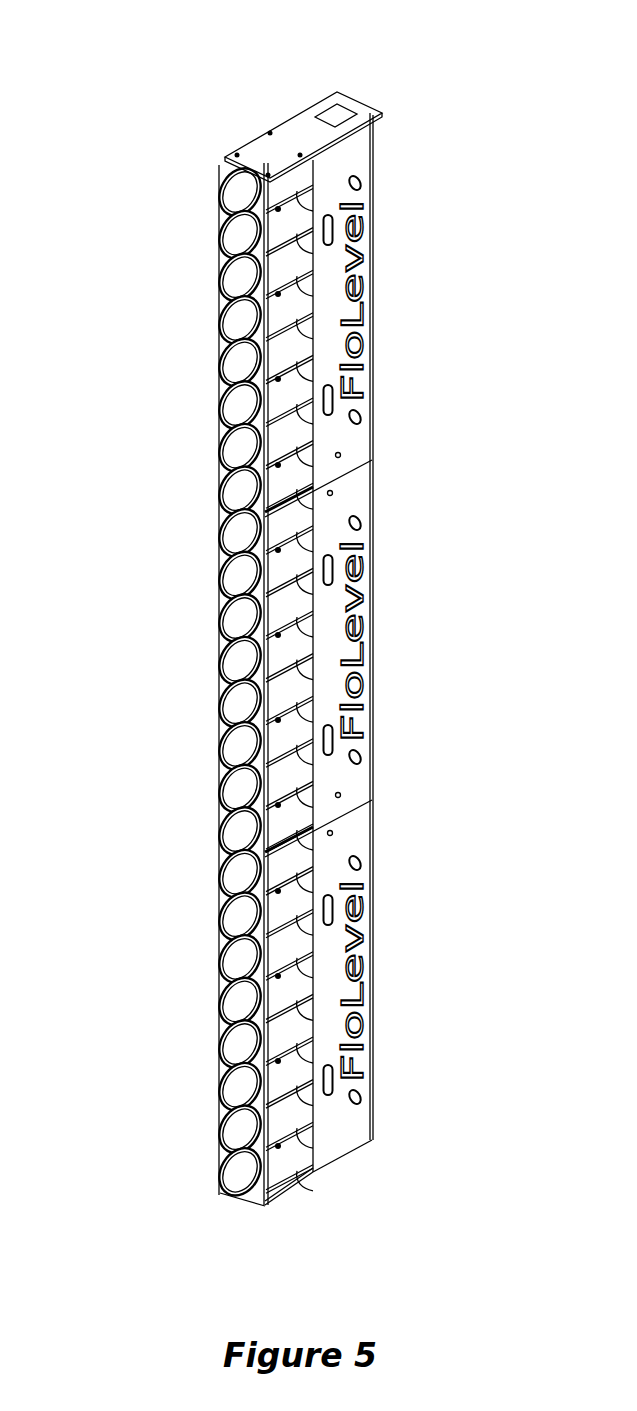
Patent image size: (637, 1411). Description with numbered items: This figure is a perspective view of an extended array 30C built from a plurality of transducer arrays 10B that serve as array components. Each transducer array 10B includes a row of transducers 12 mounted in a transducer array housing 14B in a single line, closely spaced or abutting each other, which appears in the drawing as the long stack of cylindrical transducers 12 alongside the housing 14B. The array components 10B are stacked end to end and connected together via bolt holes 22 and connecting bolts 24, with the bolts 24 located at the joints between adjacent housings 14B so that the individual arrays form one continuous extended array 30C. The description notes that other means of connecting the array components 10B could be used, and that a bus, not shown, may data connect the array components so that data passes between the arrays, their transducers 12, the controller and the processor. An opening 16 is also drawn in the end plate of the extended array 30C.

The extended array 30C is at (141, 62).
The transducer 12 is at (238, 237).
The bolt hole 22 is at (225, 157).
The opening in end plate 16 is at (337, 116).
The transducer array housing 14B is at (368, 150).
The transducer array 10B is at (383, 642).
The connecting bolt 24 is at (320, 487).